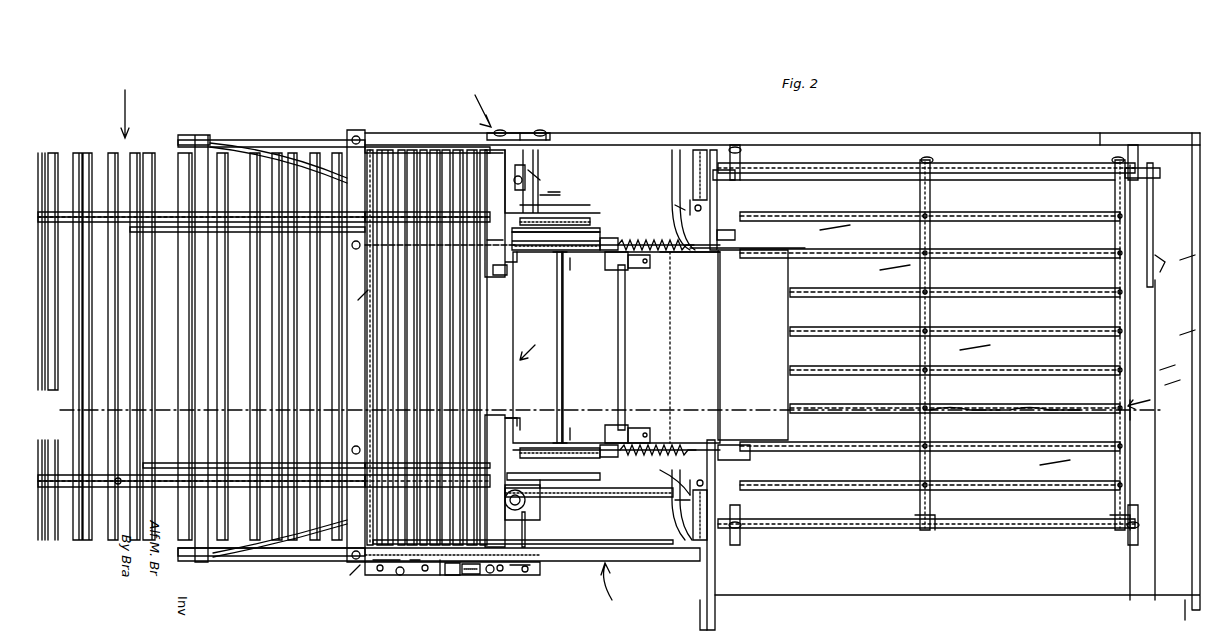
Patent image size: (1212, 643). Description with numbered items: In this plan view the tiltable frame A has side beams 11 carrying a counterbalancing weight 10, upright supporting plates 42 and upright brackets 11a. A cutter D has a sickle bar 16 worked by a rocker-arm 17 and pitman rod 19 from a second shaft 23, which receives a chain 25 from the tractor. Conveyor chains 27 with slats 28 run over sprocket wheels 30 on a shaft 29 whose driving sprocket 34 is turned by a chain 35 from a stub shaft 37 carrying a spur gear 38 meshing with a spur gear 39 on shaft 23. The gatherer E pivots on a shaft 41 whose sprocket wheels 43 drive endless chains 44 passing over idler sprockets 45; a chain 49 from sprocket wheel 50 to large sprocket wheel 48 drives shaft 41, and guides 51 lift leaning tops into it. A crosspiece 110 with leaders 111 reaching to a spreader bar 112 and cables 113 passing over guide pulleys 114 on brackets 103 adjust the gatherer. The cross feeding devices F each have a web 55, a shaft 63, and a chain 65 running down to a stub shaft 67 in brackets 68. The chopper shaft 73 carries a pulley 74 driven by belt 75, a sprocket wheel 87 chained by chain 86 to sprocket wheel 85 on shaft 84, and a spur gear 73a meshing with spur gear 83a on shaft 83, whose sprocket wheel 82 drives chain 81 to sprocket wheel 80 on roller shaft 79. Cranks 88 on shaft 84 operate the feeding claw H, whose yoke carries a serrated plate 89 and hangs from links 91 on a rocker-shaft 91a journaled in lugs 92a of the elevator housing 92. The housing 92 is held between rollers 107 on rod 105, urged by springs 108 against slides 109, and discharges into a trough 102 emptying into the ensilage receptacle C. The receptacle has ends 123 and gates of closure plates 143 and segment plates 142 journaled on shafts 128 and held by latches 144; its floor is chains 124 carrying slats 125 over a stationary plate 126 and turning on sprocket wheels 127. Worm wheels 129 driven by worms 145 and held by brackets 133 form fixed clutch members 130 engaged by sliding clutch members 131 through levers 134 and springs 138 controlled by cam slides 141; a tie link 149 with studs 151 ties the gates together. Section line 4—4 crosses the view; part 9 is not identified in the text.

The section line 4— 4 is at (607, 410).
The gatherer E is at (122, 103).
The shaft 41 is at (85, 153).
The endless chain 44 is at (240, 225).
The idler sprockets 45 is at (116, 487).
The crosspiece 110 is at (205, 137).
The leaders 111 is at (272, 140).
The guides 51 is at (193, 140).
The spreader bar 112 is at (352, 130).
The cutter D is at (360, 311).
The upright supporting plates 42 is at (440, 150).
The sprocket wheels 30 is at (372, 147).
The shaft 29 is at (405, 150).
The transverse slats or cleats 28 is at (445, 395).
The chains 27 is at (460, 290).
The depending plate 89 is at (500, 297).
The shaft 84 is at (500, 348).
The web 55 is at (495, 169).
The sprocket wheel 80 is at (492, 227).
The cables 113 is at (512, 418).
The cross feeding devices F is at (477, 104).
The sprocket wheel 85 is at (506, 132).
The chain 86 is at (520, 132).
The sprocket wheel 87 is at (545, 132).
The shaft 73 is at (560, 170).
The shaft 63 is at (525, 170).
The stub shaft 67 is at (540, 178).
The chain 65 is at (523, 182).
The brackets 68 is at (527, 535).
The chain 81 is at (585, 182).
The sprocket wheels 43 is at (562, 196).
The spur gear 73a is at (570, 228).
The spur gear 83a is at (590, 215).
The sprocket wheel 82 is at (592, 222).
The shaft 83 is at (595, 232).
The guide pulleys 114 is at (612, 238).
The springs 108 is at (672, 448).
The sliding clutch member 131 is at (672, 160).
The springs 138 is at (674, 215).
The levers 134 is at (700, 248).
The fixed clutch member 130 is at (698, 150).
The worm wheel 129 is at (708, 150).
The cranks 88 is at (537, 347).
The transverse feeding claw H is at (532, 346).
The elevator housing 92 is at (616, 347).
The rocker-shaft 91a is at (557, 315).
The upright links 91 is at (565, 430).
The lugs 92a is at (586, 349).
The transverse rod 105 is at (617, 335).
The rollers 107 is at (618, 270).
The slides 109 is at (645, 270).
The brackets 103 is at (670, 255).
The trough 102 is at (770, 265).
The brackets 133 is at (735, 235).
The worms 145 is at (735, 176).
The side beams 11 is at (1000, 133).
The frame 9 is at (875, 145).
The counterbalancing weight 10 is at (1105, 133).
The tiltable frame A is at (610, 598).
The closure plate 143 is at (926, 368).
The slats 125 is at (970, 330).
The stationary plate 126 is at (1007, 345).
The endless chains 124 is at (780, 510).
The sprocket wheels 127 is at (935, 530).
The latches 144 is at (745, 150).
The shafts 128 is at (1155, 175).
The segment plates 142 is at (735, 240).
The cam slides 141 is at (703, 605).
The studs 151 is at (1165, 262).
The tie link 149 is at (1157, 320).
The forward and rear ends 123 is at (1173, 366).
The ensilage receptacle C is at (1149, 396).
The pulley 74 is at (560, 480).
The belt 75 is at (668, 482).
The upright brackets 11a is at (600, 205).
The shaft 79 is at (545, 484).
The chain 25 is at (625, 500).
The sprocket wheel 50 is at (515, 575).
The driving sprocket 34 is at (378, 572).
The chain 35 is at (350, 577).
The sickle bar 16 is at (400, 577).
The large sprocket wheel 48 is at (427, 574).
The chain 49 is at (415, 578).
The pitman rod 19 is at (440, 578).
The stub shaft 37 is at (455, 578).
The spur gear 38 is at (472, 577).
The second shaft 23 is at (490, 576).
The spur gear 39 is at (502, 575).
The rocker-arm 17 is at (515, 578).